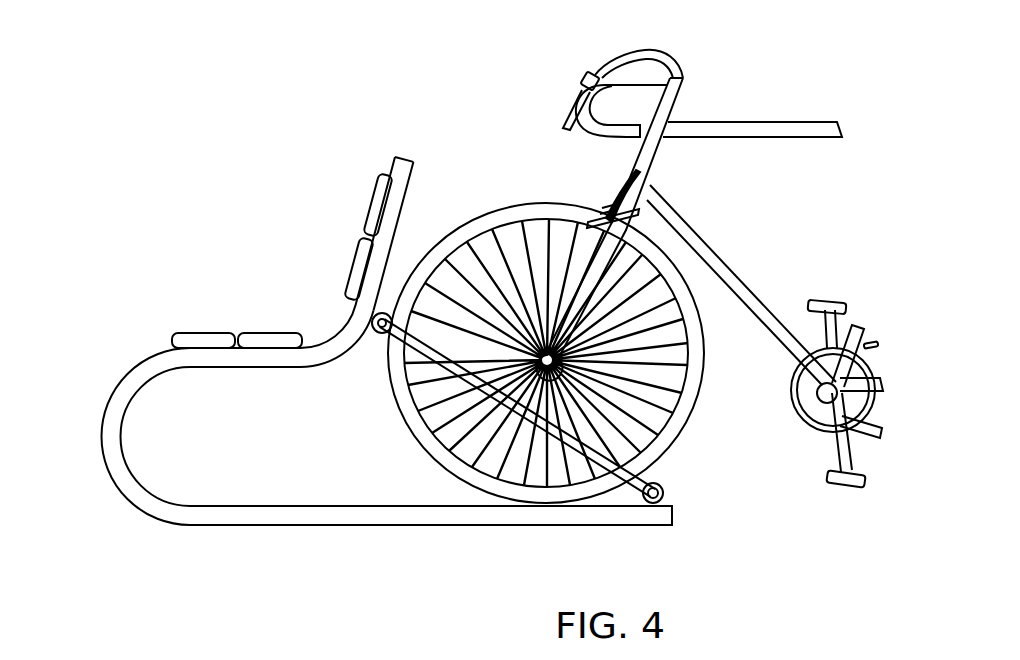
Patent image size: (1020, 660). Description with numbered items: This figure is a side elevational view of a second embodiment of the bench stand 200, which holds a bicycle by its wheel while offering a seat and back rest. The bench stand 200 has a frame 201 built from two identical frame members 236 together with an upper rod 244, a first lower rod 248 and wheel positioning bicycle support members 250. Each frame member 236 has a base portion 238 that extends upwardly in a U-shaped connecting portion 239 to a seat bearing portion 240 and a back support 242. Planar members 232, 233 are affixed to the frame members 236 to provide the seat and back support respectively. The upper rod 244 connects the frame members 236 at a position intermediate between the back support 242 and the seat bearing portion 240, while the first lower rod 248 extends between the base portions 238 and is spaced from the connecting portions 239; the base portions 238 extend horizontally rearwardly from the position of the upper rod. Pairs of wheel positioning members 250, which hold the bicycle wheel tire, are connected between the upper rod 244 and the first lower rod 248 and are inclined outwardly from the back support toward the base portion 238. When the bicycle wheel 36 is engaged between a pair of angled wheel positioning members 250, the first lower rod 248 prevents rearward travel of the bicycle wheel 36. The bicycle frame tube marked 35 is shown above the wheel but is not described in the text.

The bench stand 200 is at (418, 171).
The frame 201 is at (595, 526).
The planar member 232 is at (198, 333).
The planar member 233 is at (373, 197).
The frame member 236 is at (200, 526).
The base portion 238 is at (433, 526).
The U-shaped connecting portion 239 is at (105, 425).
The seat bearing portion 240 is at (257, 369).
The back support 242 is at (414, 204).
The upper rod 244 is at (371, 338).
The first lower rod 248 is at (664, 492).
The wheel positioning member 250 is at (672, 470).
The bicycle frame top tube 35 is at (733, 121).
The bicycle wheel 36 is at (701, 343).